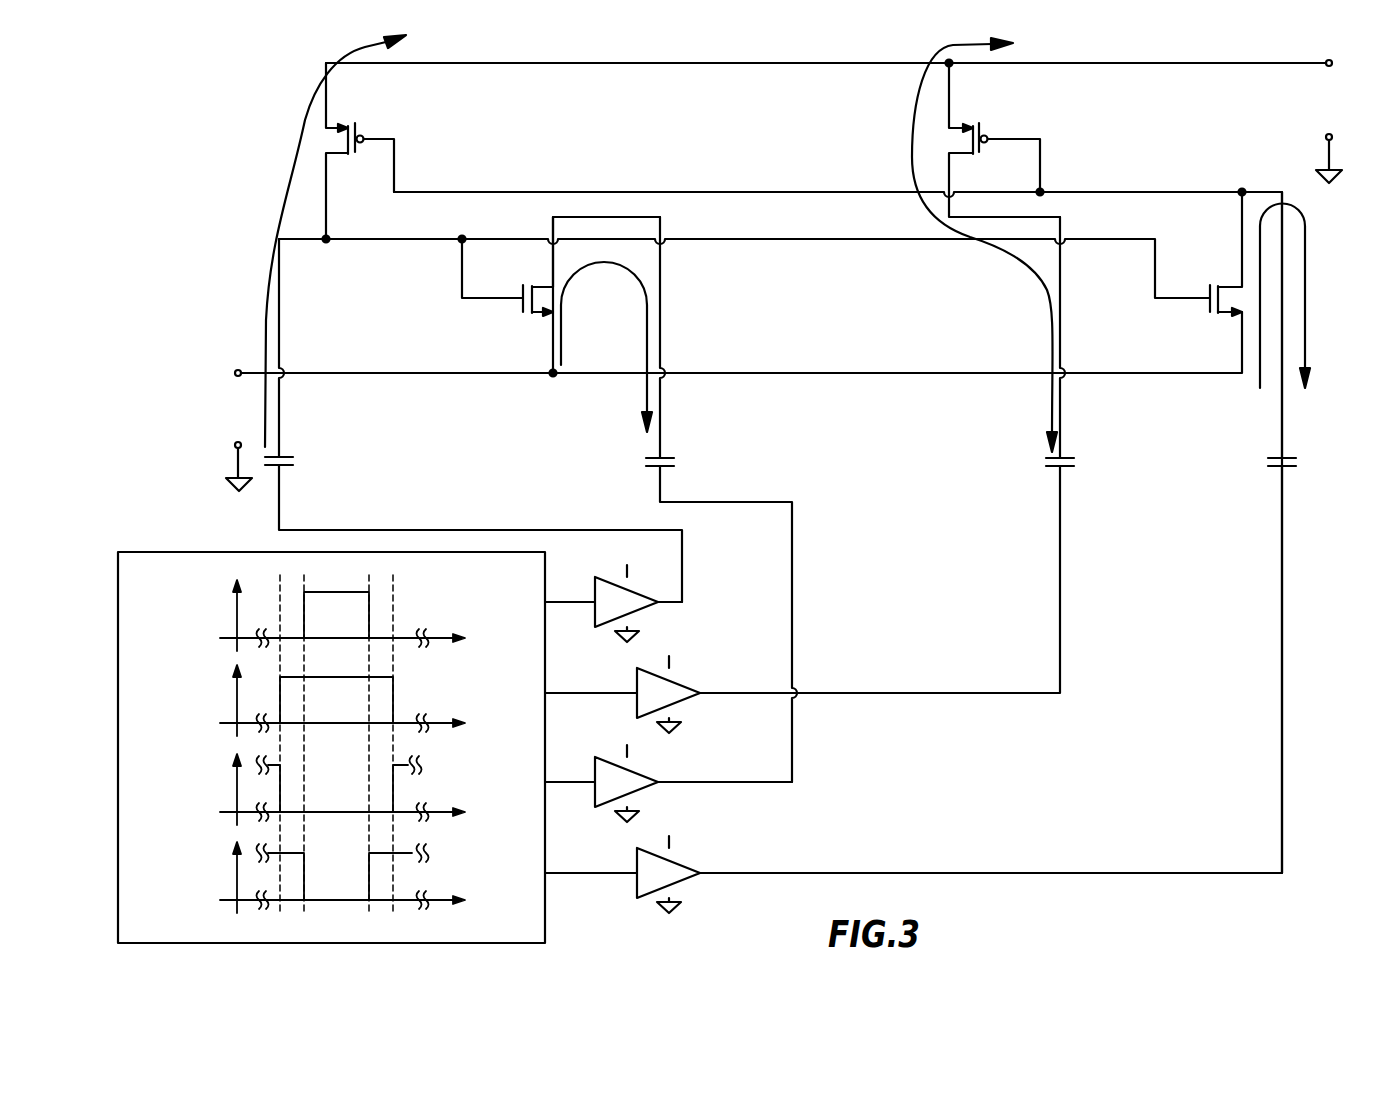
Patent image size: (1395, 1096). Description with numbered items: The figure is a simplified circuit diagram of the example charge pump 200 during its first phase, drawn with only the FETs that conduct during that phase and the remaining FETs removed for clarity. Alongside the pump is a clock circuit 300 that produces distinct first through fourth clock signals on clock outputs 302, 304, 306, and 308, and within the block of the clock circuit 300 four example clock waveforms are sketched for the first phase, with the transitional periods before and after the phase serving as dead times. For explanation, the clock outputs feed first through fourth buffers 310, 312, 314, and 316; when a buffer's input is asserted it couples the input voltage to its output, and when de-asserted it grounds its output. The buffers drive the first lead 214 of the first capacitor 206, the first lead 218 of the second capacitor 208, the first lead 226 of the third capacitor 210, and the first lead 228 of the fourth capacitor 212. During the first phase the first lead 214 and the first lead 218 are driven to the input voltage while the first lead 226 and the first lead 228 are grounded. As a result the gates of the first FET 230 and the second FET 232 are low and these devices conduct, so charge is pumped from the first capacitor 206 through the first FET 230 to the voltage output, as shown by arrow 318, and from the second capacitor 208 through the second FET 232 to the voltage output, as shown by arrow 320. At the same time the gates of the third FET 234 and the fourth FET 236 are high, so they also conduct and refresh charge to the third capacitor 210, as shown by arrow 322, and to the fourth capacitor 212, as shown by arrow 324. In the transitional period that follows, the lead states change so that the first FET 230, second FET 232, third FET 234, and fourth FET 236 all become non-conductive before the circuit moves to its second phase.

The charge pump 200 is at (221, 104).
The first capacitor 206 is at (303, 437).
The second capacitor 208 is at (1079, 442).
The third capacitor 210 is at (681, 437).
The fourth capacitor 212 is at (1299, 439).
The first lead of the first capacitor 214 is at (281, 477).
The first lead of the second capacitor 218 is at (1061, 475).
The first lead of the third capacitor 226 is at (661, 475).
The first lead of the fourth capacitor 228 is at (1283, 483).
The first FET 230 is at (366, 112).
The second FET 232 is at (991, 112).
The third FET 234 is at (512, 326).
The fourth FET 236 is at (1219, 328).
The clock circuit 300 is at (200, 551).
The first clock output 302 is at (565, 601).
The second clock output 304 is at (548, 692).
The third clock output 306 is at (565, 781).
The fourth clock output 308 is at (548, 876).
The first buffer 310 is at (645, 612).
The second buffer 312 is at (685, 701).
The third buffer 314 is at (645, 792).
The fourth buffer 316 is at (690, 879).
The arrow 318 is at (318, 59).
The arrow 320 is at (953, 45).
The arrow 322 is at (650, 288).
The arrow 324 is at (1306, 290).